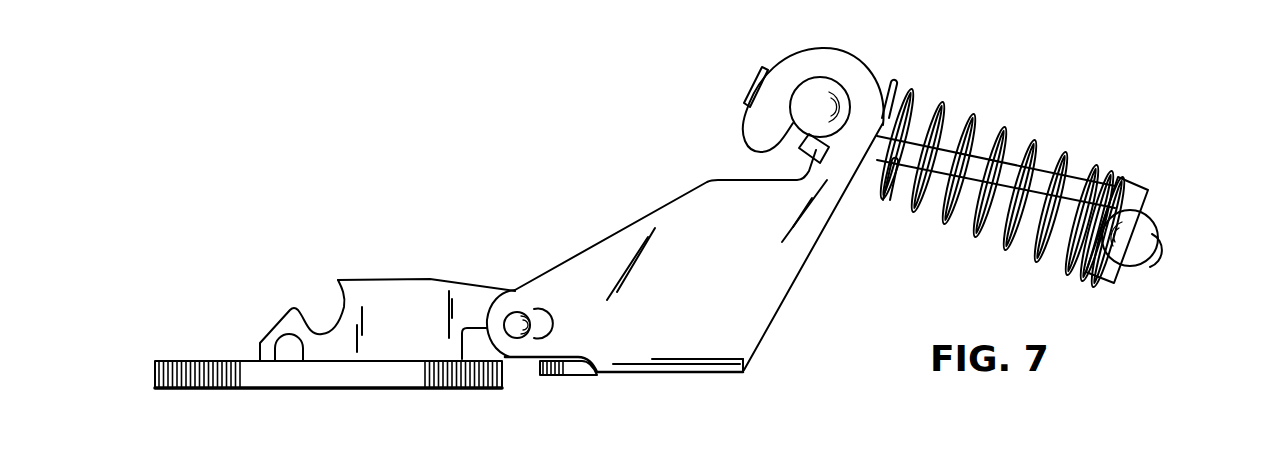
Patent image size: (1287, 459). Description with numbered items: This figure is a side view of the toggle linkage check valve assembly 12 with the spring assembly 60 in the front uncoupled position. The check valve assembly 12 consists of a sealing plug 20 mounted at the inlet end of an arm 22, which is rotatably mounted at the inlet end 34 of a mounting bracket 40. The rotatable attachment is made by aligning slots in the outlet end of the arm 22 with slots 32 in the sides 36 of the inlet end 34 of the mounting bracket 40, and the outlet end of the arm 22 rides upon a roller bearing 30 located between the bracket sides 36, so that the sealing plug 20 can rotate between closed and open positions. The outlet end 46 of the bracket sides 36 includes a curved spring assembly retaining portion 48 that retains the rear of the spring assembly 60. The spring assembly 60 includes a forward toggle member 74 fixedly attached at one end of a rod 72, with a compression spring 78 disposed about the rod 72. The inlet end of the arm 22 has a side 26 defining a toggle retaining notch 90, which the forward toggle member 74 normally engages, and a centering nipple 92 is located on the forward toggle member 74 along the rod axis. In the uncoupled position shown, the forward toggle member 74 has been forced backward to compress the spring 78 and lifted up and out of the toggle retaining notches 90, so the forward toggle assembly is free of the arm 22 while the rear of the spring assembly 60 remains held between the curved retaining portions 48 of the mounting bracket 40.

The check valve assembly 12 is at (945, 71).
The sealing plug 20 is at (443, 389).
The arm 22 is at (387, 282).
The side of arm 26 is at (413, 296).
The roller bearing 30 is at (521, 358).
The slots 32 is at (549, 325).
The inlet end of mounting bracket 34 is at (556, 295).
The side of mounting bracket 36 is at (767, 316).
The mounting bracket 40 is at (686, 379).
The outlet end of mounting bracket 46 is at (758, 278).
The curved spring assembly retaining portion 48 is at (844, 63).
The spring assembly 60 is at (1005, 97).
The rod 72 is at (1027, 188).
The forward toggle member 74 is at (1170, 226).
The compression spring 78 is at (945, 224).
The toggle retaining notches 90 is at (336, 284).
The centering nipple 92 is at (1165, 265).